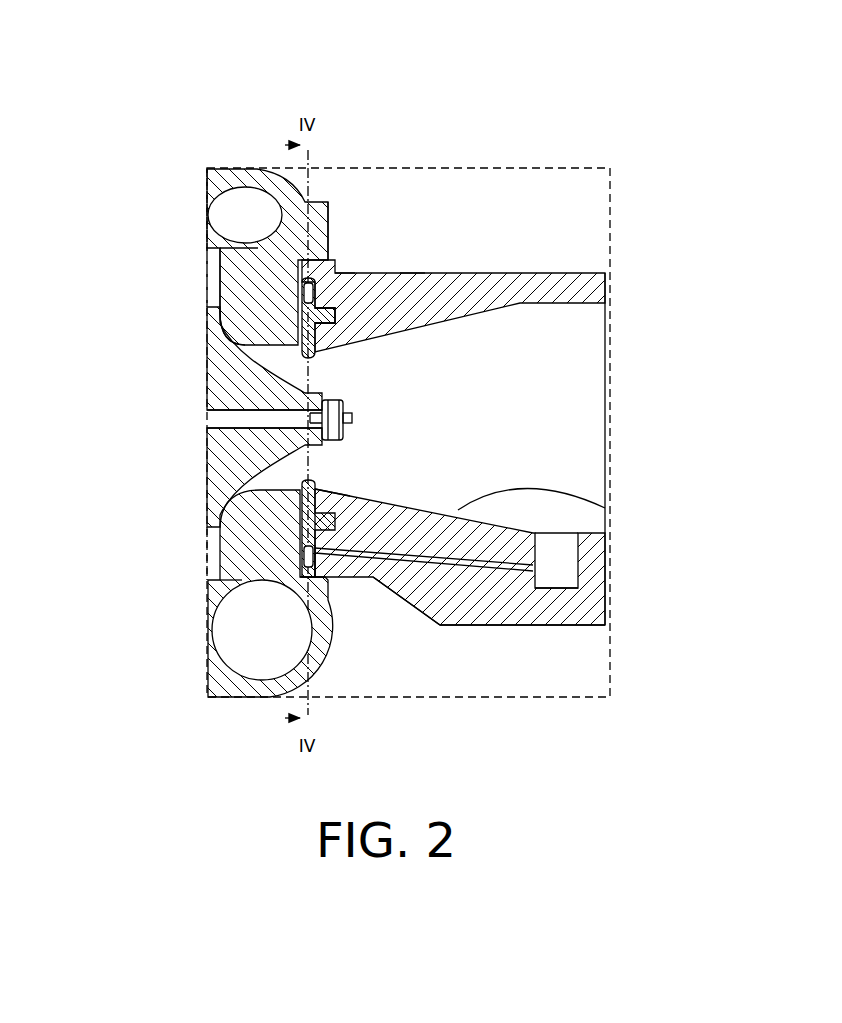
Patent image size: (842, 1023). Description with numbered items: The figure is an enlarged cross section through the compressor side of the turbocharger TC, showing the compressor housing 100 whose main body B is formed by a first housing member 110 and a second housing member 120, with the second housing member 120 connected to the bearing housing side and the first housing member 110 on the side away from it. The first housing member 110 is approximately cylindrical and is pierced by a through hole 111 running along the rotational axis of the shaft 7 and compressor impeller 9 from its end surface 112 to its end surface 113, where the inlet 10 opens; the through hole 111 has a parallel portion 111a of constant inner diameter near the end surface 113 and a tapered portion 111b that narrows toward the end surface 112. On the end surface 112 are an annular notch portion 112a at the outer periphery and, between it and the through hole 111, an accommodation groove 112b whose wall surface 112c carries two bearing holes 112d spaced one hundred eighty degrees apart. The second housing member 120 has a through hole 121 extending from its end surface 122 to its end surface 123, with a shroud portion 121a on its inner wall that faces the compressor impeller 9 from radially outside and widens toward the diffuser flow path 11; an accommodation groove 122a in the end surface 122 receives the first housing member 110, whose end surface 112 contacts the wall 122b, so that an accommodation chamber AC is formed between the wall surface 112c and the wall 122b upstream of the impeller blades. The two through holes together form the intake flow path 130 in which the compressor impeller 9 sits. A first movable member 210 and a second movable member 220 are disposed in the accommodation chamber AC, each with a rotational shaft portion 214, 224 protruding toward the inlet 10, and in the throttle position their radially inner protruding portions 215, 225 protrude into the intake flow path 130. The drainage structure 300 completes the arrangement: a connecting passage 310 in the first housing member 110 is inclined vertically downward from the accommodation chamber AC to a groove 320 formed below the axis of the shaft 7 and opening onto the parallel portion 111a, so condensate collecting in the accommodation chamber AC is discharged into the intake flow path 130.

The turbocharger TC is at (120, 133).
The shaft 7 is at (210, 419).
The compressor impeller 9 is at (207, 325).
The diffuser flow path 11 is at (208, 280).
The accommodation chamber AC is at (219, 256).
The inlet 10 is at (412, 457).
The compressor housing 100 is at (487, 274).
The first housing member 110 is at (412, 457).
The through hole 111 is at (567, 303).
The parallel portion 111a is at (556, 588).
The tapered portion 111b is at (605, 515).
The end surface 112 is at (373, 577).
The notch portion 112a is at (240, 581).
The accommodation groove 112b is at (335, 577).
The wall surface 112c is at (252, 493).
The bearing holes 112d is at (318, 560).
The end surface 113 is at (607, 625).
The second housing member 120 is at (300, 198).
The through hole 121 is at (207, 380).
The shroud portion 121a is at (207, 355).
The end surface 122 is at (330, 217).
The accommodation groove 122a is at (352, 580).
The wall 122b is at (352, 274).
The end surface 123 is at (207, 180).
The intake flow path 130 is at (470, 462).
The first movable member 210 is at (320, 350).
The rotational shaft portion 214 is at (340, 317).
The protruding portion 215 is at (320, 368).
The second movable member 220 is at (335, 520).
The rotational shaft portion 224 is at (355, 556).
The protruding portion 225 is at (462, 560).
The drainage structure 300 is at (420, 66).
The connecting passage 310 is at (540, 625).
The groove 320 is at (565, 625).
The main body B is at (410, 274).